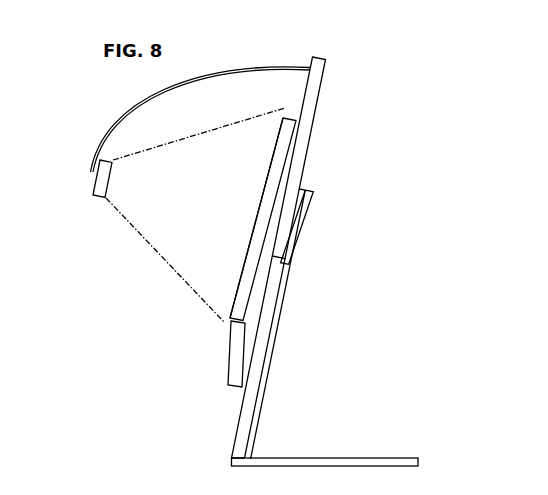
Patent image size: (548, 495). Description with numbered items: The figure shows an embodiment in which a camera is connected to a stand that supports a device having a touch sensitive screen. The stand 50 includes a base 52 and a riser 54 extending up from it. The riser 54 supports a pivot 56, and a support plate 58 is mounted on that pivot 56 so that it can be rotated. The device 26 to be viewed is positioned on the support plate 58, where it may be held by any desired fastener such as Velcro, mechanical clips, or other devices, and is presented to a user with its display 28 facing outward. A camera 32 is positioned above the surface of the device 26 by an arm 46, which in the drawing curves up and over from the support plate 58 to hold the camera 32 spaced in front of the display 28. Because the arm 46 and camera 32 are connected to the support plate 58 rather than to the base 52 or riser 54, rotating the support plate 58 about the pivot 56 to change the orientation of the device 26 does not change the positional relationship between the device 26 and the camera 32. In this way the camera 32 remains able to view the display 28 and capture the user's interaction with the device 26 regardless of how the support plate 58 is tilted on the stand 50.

The device 26 is at (246, 277).
The display 28 is at (254, 202).
The camera 32 is at (106, 182).
The arm 46 is at (113, 121).
The stand 50 is at (404, 147).
The base 52 is at (350, 458).
The riser 54 is at (267, 360).
The pivot 56 is at (293, 222).
The support plate 58 is at (301, 115).